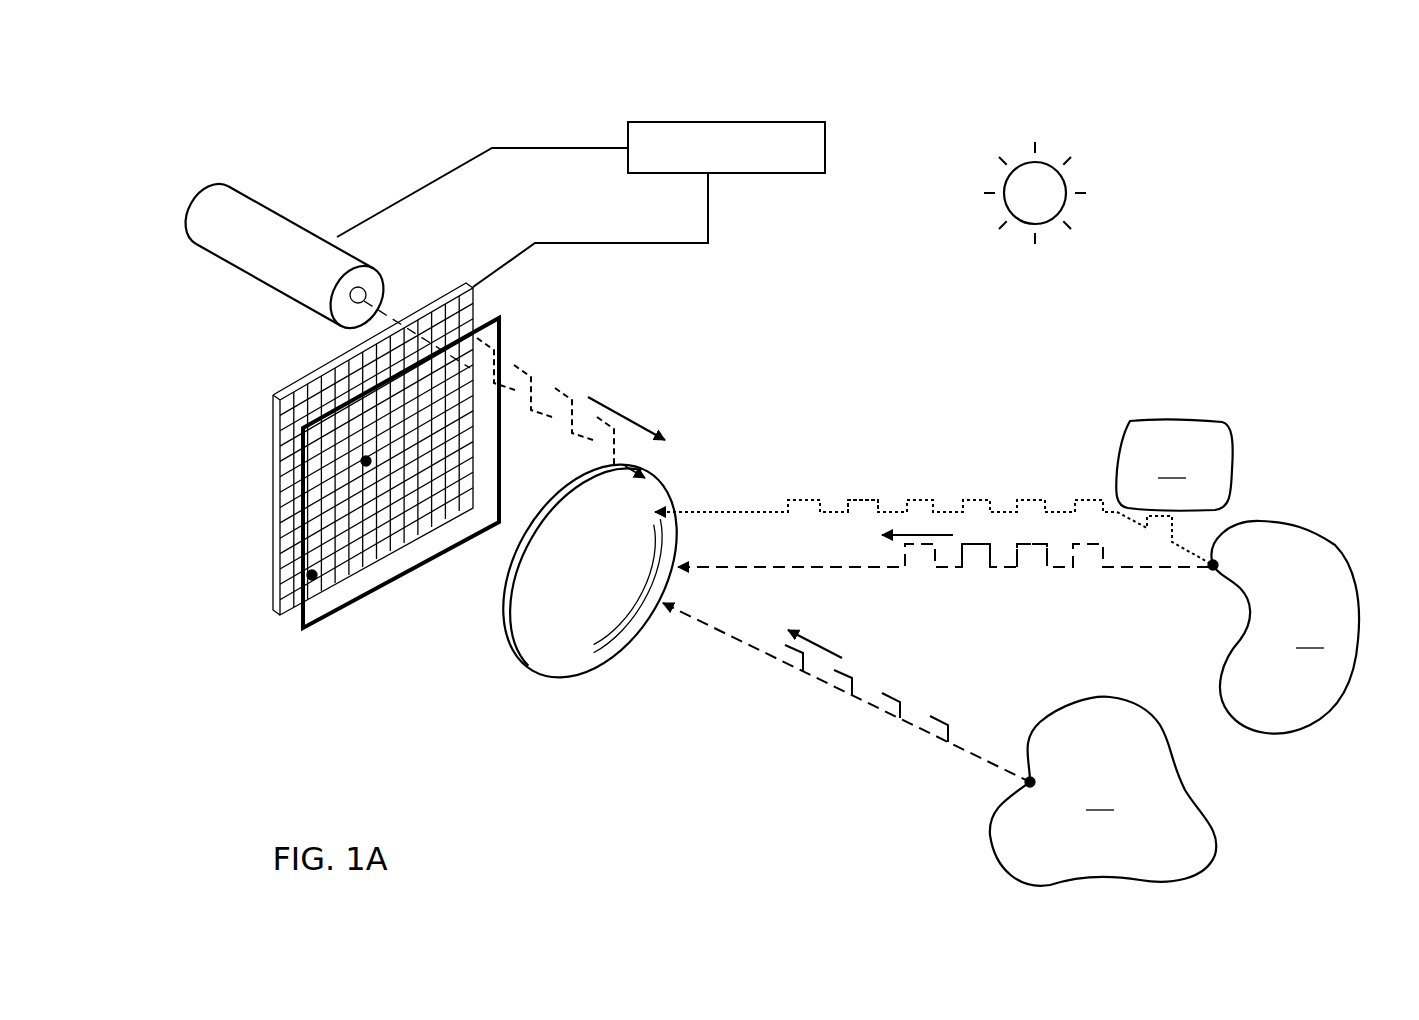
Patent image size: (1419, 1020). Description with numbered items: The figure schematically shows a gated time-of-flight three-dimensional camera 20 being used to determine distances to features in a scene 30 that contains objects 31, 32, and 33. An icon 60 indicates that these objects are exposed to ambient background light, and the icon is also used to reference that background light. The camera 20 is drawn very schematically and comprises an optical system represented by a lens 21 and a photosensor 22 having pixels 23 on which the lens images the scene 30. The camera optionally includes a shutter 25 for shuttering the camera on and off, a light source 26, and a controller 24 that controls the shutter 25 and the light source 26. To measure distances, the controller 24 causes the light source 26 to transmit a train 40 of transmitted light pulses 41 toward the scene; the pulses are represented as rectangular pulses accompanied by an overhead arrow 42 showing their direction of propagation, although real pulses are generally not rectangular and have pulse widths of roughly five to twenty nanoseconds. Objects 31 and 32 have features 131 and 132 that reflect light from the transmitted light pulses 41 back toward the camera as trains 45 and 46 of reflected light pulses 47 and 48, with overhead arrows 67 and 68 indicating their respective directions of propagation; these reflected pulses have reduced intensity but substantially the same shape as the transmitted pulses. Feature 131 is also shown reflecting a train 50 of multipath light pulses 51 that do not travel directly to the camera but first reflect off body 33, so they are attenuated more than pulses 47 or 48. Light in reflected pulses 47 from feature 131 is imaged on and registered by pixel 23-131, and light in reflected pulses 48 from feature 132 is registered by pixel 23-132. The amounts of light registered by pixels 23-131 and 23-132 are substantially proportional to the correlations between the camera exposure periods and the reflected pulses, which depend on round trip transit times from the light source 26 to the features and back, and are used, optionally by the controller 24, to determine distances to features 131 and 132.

The gated TOF-3D camera 20 is at (270, 121).
The lens 21 is at (597, 668).
The photosensor 22 is at (222, 522).
The pixels 23 is at (313, 443).
The controller 24 is at (725, 122).
The shutter 25 is at (308, 630).
The light source 26 is at (291, 208).
The pixel 23-131 is at (312, 575).
The pixel 23-132 is at (366, 461).
The scene 30 is at (1325, 408).
The object 31 is at (1285, 627).
The object 32 is at (1103, 791).
The object 33 is at (1174, 464).
The train of transmitted light pulses 40 is at (730, 343).
The transmitted light pulses 41 is at (558, 390).
The overhead arrow 42 is at (649, 426).
The train of reflected light pulses 45 is at (1047, 600).
The train of reflected light pulses 46 is at (872, 765).
The reflected light pulses 47 is at (1040, 548).
The reflected light pulses 48 is at (940, 720).
The train of multipath reflected light pulses 50 is at (963, 484).
The multipath reflected light pulses 51 is at (915, 500).
The icon 60 is at (1066, 180).
The overhead arrow 67 is at (890, 538).
The overhead arrow 68 is at (838, 657).
The feature 131 is at (1213, 565).
The feature 132 is at (1030, 782).